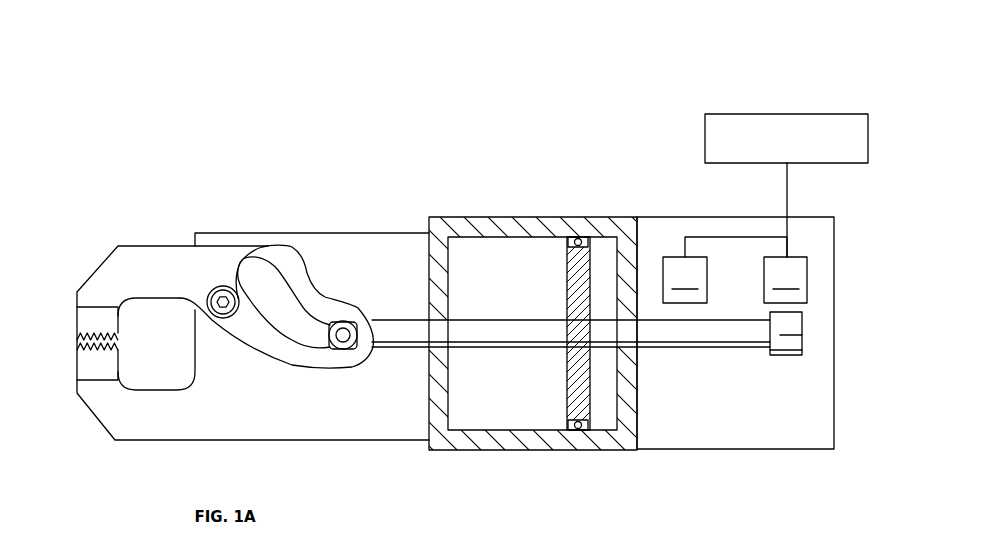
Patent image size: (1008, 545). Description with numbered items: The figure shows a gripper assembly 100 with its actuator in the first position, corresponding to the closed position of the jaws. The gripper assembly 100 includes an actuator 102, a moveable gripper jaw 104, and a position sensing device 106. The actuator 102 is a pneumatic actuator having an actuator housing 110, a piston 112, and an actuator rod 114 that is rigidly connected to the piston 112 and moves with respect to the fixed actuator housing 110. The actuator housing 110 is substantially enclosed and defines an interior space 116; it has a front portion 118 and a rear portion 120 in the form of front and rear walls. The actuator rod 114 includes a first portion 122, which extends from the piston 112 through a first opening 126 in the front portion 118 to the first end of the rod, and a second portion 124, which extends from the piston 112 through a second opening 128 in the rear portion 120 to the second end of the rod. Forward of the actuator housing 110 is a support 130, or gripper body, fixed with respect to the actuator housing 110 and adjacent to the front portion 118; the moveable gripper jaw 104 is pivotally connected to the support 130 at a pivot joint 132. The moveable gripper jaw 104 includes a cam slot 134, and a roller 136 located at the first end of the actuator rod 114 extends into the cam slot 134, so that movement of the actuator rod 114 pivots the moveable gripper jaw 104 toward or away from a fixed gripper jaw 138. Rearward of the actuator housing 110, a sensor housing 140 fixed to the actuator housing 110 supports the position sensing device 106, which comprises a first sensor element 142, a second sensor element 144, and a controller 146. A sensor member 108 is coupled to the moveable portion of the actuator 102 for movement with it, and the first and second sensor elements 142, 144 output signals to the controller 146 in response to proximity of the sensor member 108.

The gripper assembly 100 is at (135, 172).
The actuator 102 is at (432, 306).
The moveable gripper jaw 104 is at (82, 260).
The position sensing device 106 is at (710, 110).
The sensor member 108 is at (790, 356).
The actuator housing 110 is at (442, 217).
The piston 112 is at (565, 250).
The actuator rod 114 is at (508, 337).
The interior space 116 is at (493, 252).
The front portion 118 is at (428, 245).
The rear portion 120 is at (640, 428).
The first portion 122 is at (397, 348).
The second portion 124 is at (722, 342).
The first opening 126 is at (428, 325).
The second opening 128 is at (640, 342).
The support 130 is at (323, 232).
The pivot joint 132 is at (212, 292).
The cam slot 134 is at (262, 252).
The roller 136 is at (338, 340).
The fixed gripper jaw 138 is at (103, 443).
The sensor housing 140 is at (790, 450).
The first sensor element 142 is at (785, 280).
The second sensor element 144 is at (725, 270).
The controller 146 is at (774, 114).